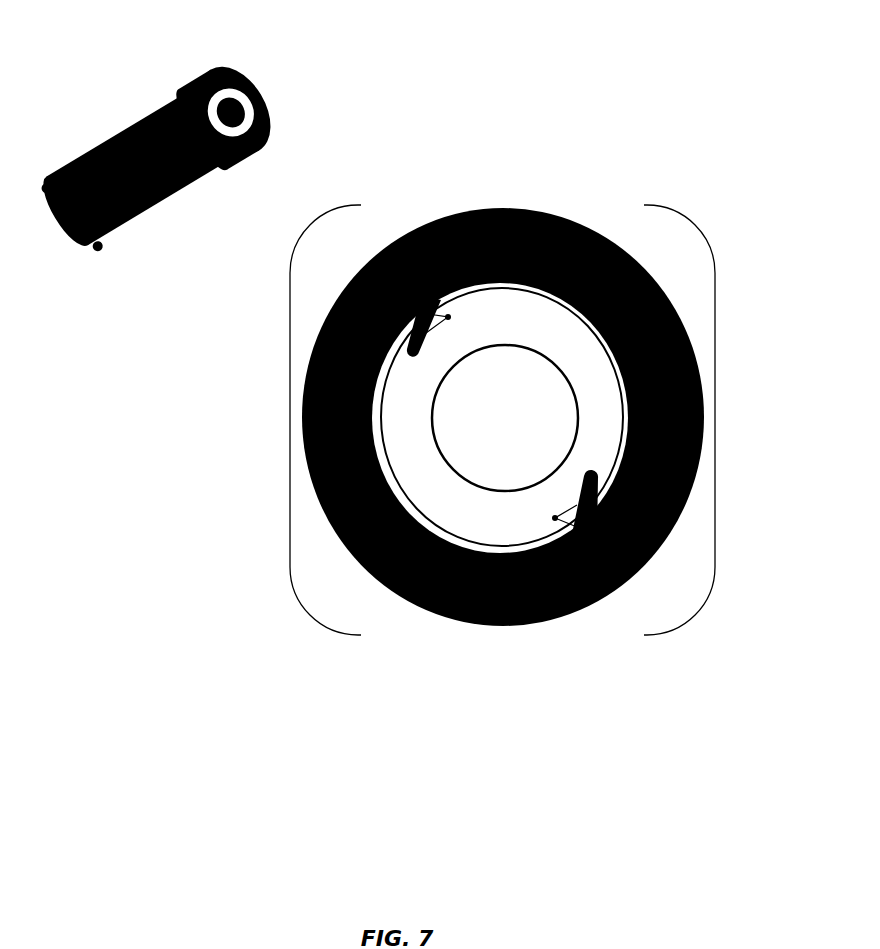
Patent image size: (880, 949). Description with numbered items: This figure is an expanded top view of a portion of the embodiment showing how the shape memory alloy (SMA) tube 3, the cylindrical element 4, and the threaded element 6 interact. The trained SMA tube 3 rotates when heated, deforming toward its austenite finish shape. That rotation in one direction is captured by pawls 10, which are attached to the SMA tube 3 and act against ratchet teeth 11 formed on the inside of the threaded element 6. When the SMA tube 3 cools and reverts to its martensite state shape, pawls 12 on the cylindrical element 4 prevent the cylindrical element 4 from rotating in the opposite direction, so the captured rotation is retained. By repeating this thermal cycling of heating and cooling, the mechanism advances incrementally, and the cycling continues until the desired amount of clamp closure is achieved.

The shape memory alloy (SMA) tube 3 is at (267, 137).
The cylindrical element 4 is at (145, 220).
The threaded element 6 is at (238, 73).
The pawls 10 is at (417, 352).
The ratchet teeth 11 is at (347, 550).
The pawls 12 is at (313, 486).